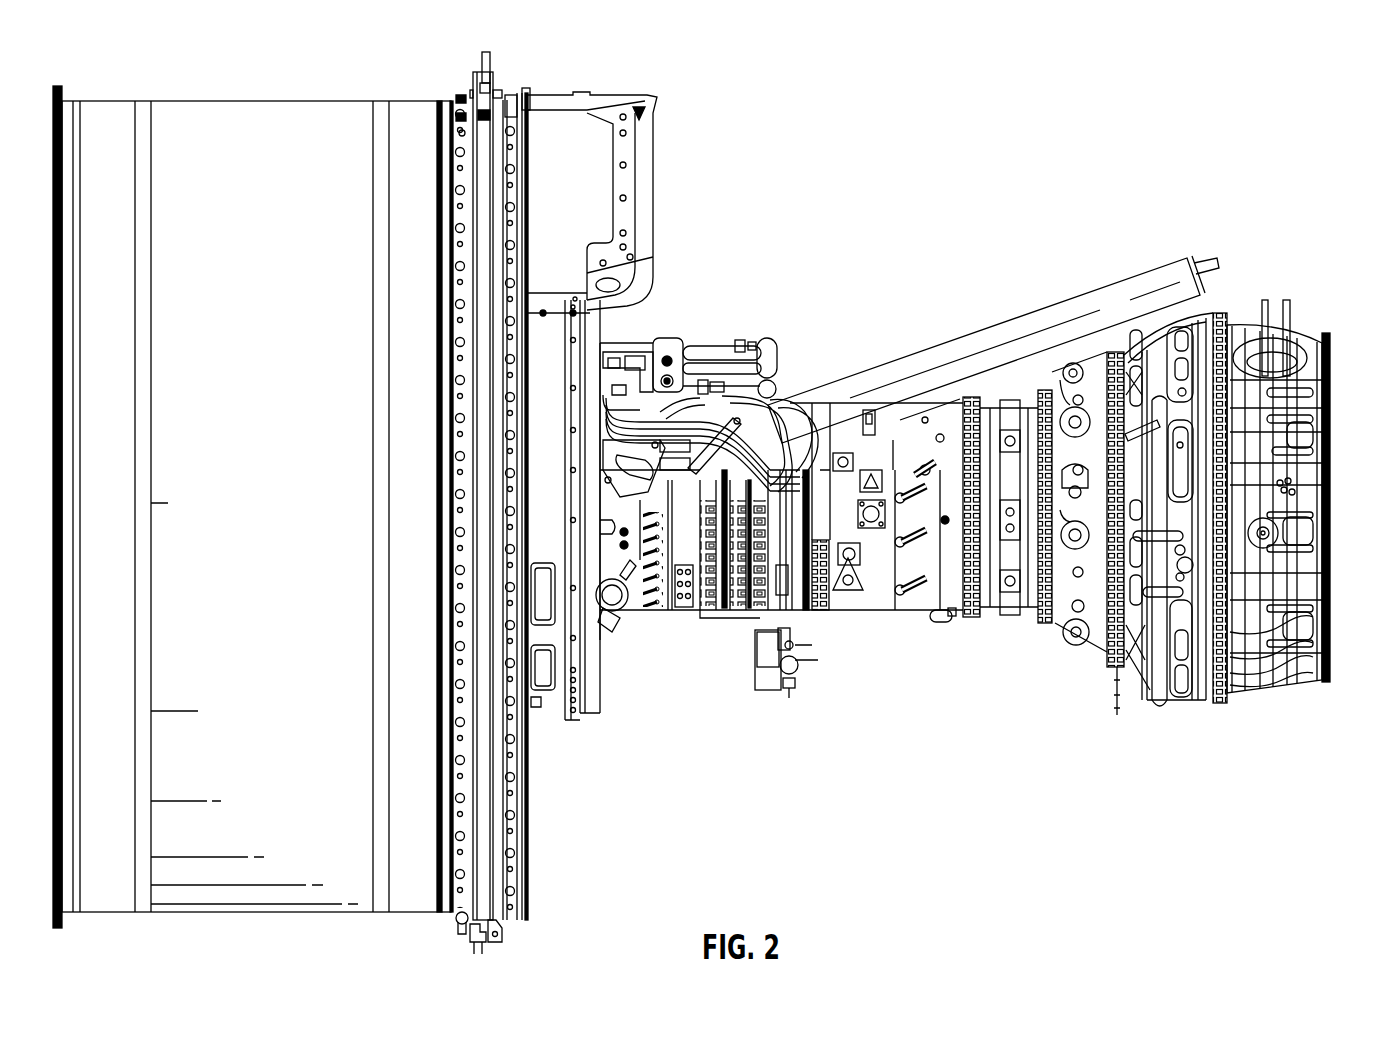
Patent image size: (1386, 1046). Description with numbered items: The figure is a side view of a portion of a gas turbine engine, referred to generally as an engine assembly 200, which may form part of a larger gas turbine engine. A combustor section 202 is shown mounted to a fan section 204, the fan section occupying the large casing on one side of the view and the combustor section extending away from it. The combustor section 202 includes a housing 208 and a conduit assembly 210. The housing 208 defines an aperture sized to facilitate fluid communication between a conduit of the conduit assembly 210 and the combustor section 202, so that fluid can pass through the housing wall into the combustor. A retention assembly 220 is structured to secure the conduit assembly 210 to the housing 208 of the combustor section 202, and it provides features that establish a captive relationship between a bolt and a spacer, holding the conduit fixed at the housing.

The engine assembly 200 is at (1220, 101).
The combustor section 202 is at (1303, 334).
The fan section 204 is at (267, 101).
The housing 208 is at (945, 610).
The conduit assembly 210 is at (665, 405).
The retention assembly 220 is at (683, 314).